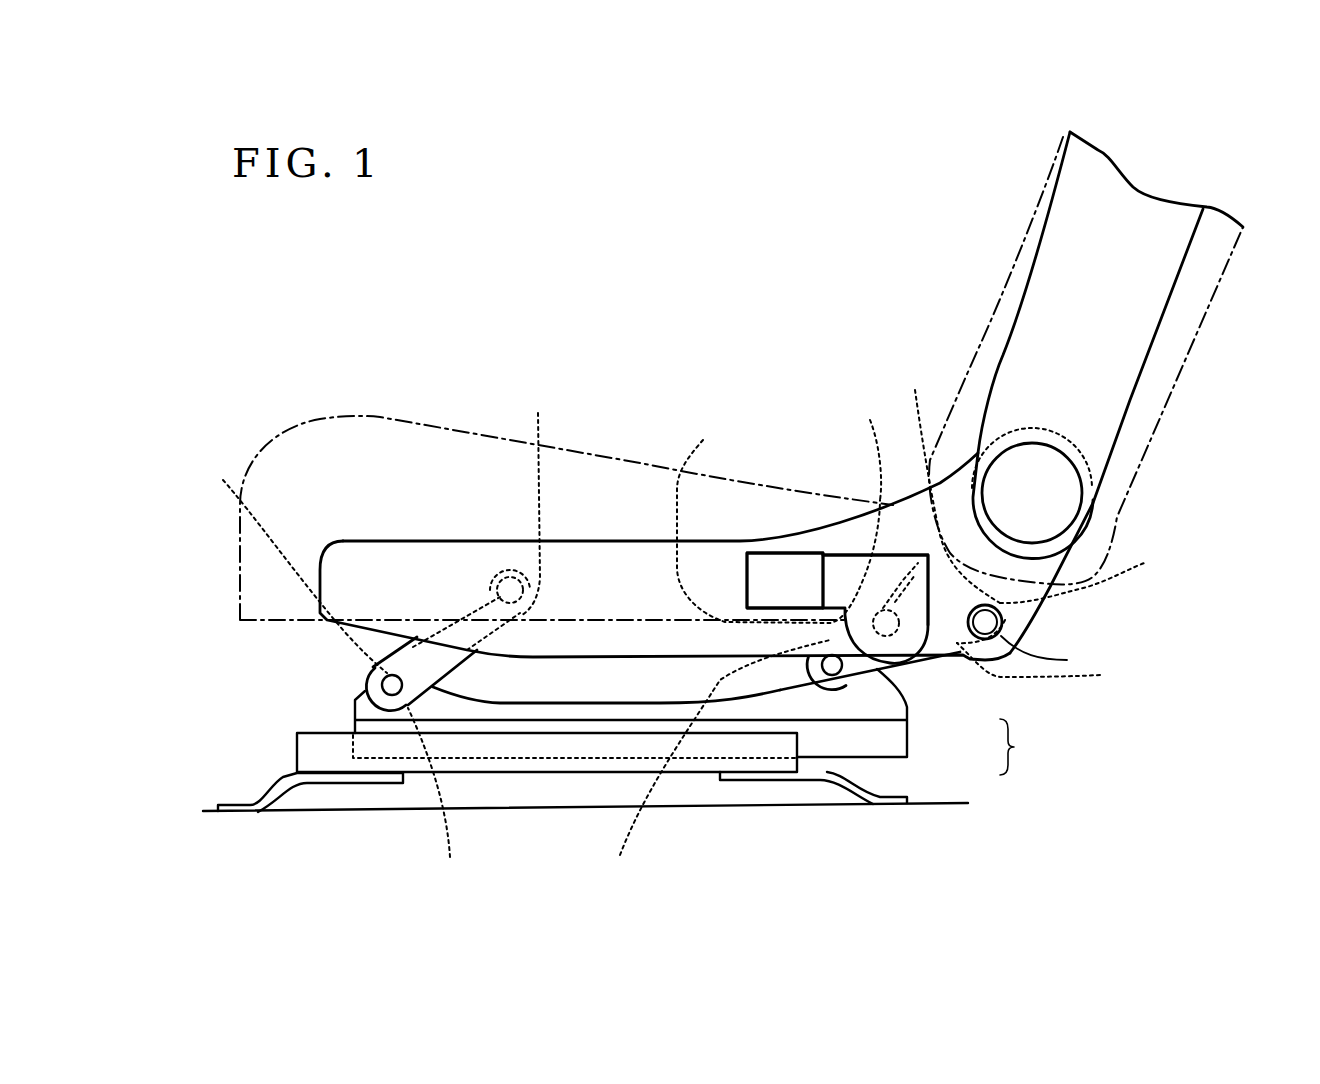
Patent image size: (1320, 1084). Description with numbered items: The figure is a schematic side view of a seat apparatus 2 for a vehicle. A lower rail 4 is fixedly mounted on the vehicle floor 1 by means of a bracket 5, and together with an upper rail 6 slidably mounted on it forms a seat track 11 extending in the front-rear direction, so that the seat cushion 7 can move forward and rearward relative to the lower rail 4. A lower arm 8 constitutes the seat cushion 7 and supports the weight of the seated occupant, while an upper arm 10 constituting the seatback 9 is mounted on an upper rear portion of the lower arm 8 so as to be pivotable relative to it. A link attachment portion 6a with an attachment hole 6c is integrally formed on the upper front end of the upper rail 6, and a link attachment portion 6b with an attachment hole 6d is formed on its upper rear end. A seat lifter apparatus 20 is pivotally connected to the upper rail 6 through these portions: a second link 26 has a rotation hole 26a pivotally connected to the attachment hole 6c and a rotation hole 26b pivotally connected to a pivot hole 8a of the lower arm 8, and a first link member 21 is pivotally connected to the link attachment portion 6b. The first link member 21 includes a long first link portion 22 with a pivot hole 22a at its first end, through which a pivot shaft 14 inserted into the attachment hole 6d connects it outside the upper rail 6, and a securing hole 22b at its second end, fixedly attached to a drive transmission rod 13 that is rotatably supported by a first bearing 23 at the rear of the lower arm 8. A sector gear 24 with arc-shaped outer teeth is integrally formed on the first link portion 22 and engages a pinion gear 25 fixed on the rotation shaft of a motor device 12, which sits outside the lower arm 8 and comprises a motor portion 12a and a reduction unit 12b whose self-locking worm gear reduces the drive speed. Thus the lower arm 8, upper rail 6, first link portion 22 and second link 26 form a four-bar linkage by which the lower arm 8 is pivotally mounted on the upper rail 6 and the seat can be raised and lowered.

The vehicle floor 1 is at (942, 803).
The seat apparatus 2 is at (600, 283).
The lower rail 4 is at (773, 742).
The bracket 5 is at (312, 785).
The upper rail 6 is at (890, 729).
The link attachment portion 6a is at (292, 560).
The link attachment portion 6b is at (864, 446).
The attachment hole 6c is at (437, 798).
The attachment hole 6d is at (716, 764).
The seat cushion 7 is at (413, 420).
The lower arm 8 is at (597, 538).
The pivot hole 8a is at (533, 501).
The seatback 9 is at (988, 315).
The upper arm 10 is at (1137, 360).
The seat track 11 is at (1022, 747).
The motor device 12 is at (758, 533).
The motor portion 12a is at (787, 557).
The reduction unit 12b is at (842, 562).
The drive transmission rod 13 is at (1000, 630).
The pivot shaft 14 is at (392, 685).
The seat lifter apparatus 20 is at (968, 545).
The first link member 21 is at (1100, 675).
The first link portion 22 is at (930, 658).
The pivot hole 22a is at (825, 671).
The securing hole 22b is at (1072, 595).
The first bearing 23 is at (1067, 660).
The sector gear 24 is at (950, 482).
The pinion gear 25 is at (778, 517).
The second link 26 is at (410, 650).
The rotation hole 26a is at (373, 670).
The rotation hole 26b is at (500, 573).